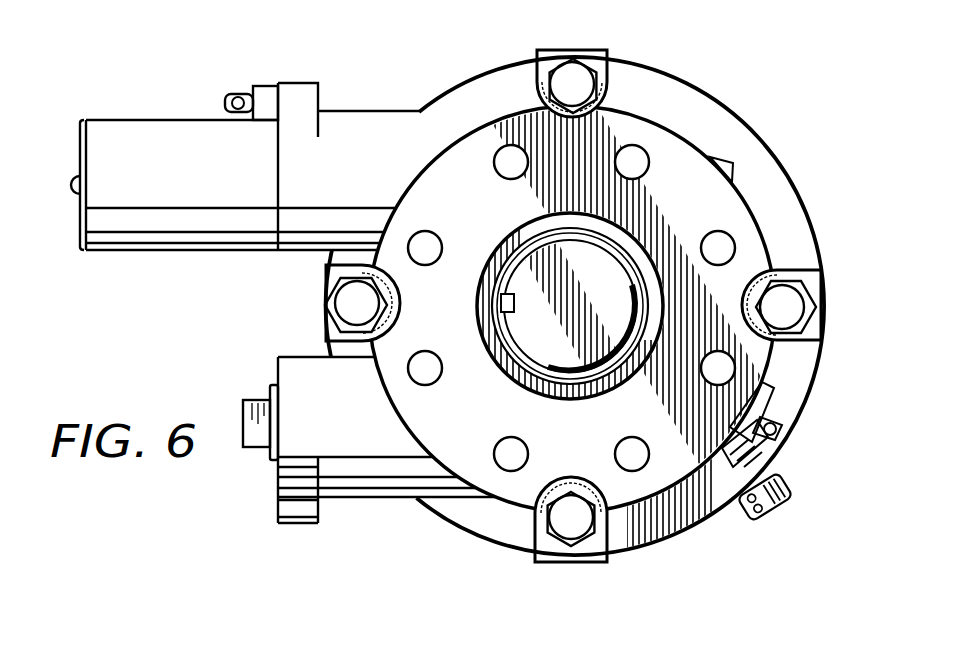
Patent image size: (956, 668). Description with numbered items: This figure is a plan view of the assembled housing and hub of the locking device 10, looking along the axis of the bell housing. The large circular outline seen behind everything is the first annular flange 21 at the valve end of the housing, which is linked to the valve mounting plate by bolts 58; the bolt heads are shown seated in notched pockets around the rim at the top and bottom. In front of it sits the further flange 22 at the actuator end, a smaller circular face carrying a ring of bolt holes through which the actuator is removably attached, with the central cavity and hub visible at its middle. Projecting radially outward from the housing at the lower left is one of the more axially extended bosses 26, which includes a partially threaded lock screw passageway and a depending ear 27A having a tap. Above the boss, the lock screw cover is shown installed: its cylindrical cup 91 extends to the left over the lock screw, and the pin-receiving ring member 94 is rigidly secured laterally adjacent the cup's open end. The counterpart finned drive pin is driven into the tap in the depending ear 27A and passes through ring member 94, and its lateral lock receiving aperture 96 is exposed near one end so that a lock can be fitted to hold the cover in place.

The locking device 10 is at (218, 518).
The first annular flange 21 is at (722, 120).
The further flange 22 is at (717, 210).
The boss 26 is at (373, 502).
The depending ear 27A is at (292, 523).
The bolts 58 is at (575, 61).
The cylindrical cup 91 is at (127, 119).
The pin-receiving ring member 94 is at (270, 85).
The lock receiving aperture 96 is at (237, 93).